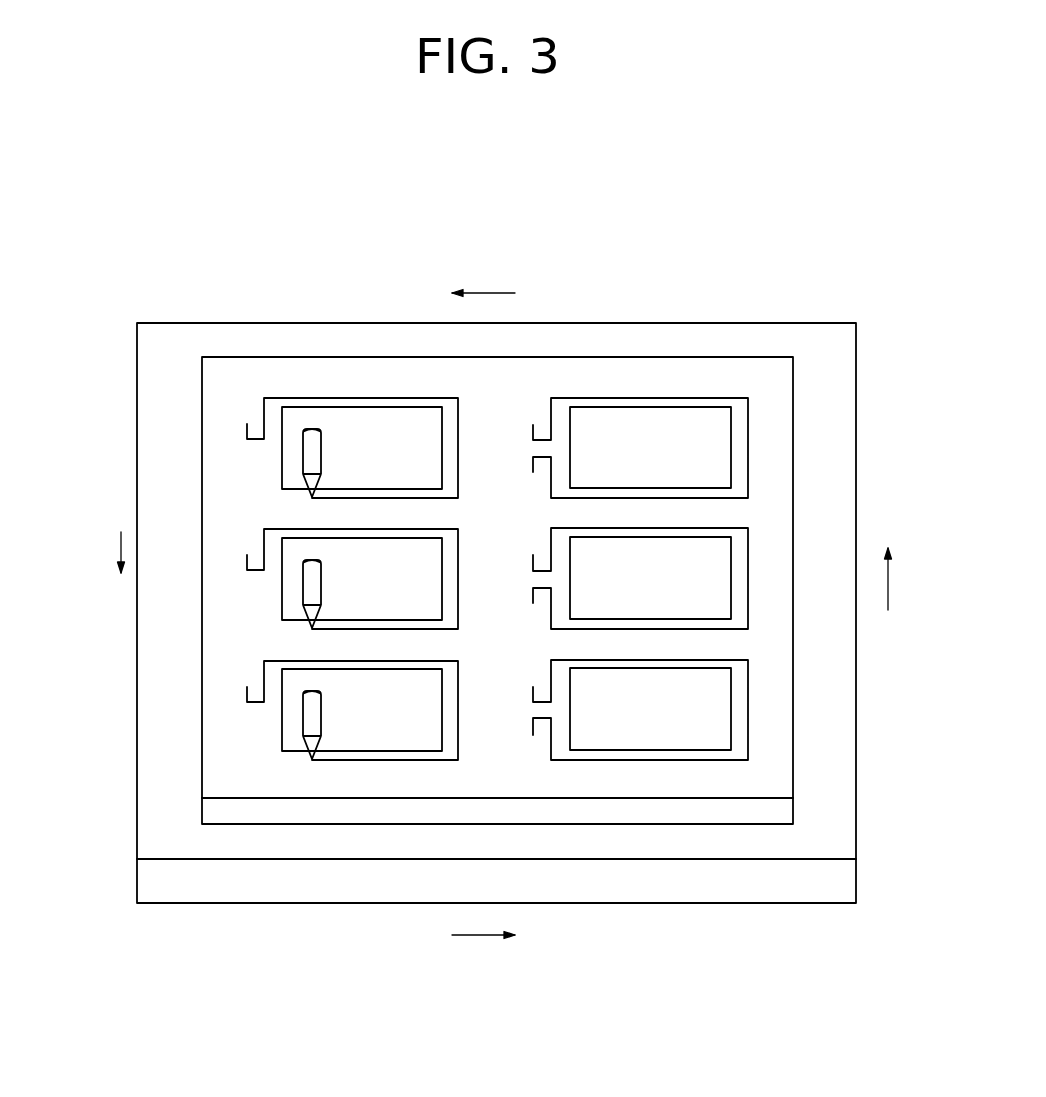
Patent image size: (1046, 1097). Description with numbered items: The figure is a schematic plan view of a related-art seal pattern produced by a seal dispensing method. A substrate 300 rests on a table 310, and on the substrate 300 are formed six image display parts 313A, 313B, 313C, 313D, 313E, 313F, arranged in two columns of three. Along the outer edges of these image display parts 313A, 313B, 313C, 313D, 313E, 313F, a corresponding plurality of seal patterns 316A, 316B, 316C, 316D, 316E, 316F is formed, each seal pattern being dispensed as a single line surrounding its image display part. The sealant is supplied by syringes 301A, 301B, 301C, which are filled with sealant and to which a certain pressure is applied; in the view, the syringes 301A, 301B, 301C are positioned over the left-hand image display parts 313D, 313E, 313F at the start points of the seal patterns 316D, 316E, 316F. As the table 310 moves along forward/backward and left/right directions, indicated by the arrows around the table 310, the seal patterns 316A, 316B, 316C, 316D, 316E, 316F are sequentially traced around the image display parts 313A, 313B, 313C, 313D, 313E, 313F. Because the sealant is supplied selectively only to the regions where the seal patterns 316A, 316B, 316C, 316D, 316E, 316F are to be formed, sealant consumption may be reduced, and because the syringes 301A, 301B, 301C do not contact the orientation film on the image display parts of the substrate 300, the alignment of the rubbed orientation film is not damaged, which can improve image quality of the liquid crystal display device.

The substrate 300 is at (777, 813).
The table 310 is at (833, 880).
The image display part 313A is at (680, 461).
The image display part 313B is at (680, 593).
The image display part 313C is at (680, 723).
The image display part 313D is at (397, 461).
The image display part 313E is at (397, 592).
The image display part 313F is at (397, 722).
The seal pattern 316A is at (687, 397).
The seal pattern 316B is at (687, 527).
The seal pattern 316C is at (687, 659).
The seal pattern 316D is at (310, 398).
The seal pattern 316E is at (310, 529).
The seal pattern 316F is at (310, 661).
The syringe 301A is at (310, 457).
The syringe 301B is at (310, 588).
The syringe 301C is at (310, 718).